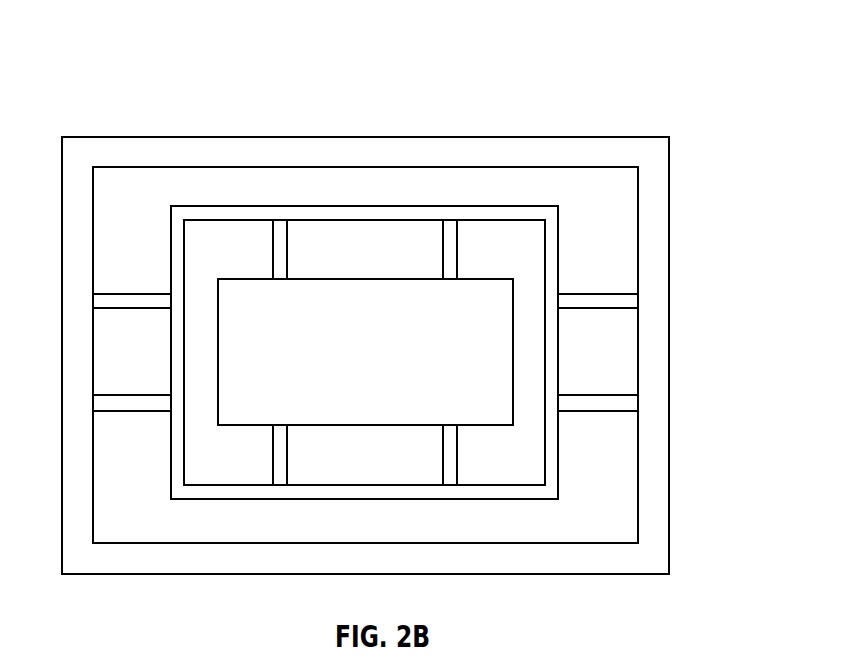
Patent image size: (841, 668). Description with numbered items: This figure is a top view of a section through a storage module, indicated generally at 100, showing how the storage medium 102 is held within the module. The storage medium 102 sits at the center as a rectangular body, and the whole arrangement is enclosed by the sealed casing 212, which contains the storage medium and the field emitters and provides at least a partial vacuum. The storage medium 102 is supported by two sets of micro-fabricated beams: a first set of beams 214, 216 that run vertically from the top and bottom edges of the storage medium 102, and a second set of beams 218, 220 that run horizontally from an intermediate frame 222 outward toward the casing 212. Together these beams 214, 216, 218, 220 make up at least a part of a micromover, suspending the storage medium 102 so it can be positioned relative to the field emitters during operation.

The integrated circuit package assembly 100 is at (400, 311).
The storage medium 102 is at (384, 365).
The sealed casing 212 is at (647, 486).
The micro-fabricated beam 214 is at (287, 259).
The micro-fabricated beam 216 is at (455, 257).
The micro-fabricated beam 218 is at (595, 293).
The micro-fabricated beam 220 is at (617, 412).
The inner frame 222 is at (520, 205).